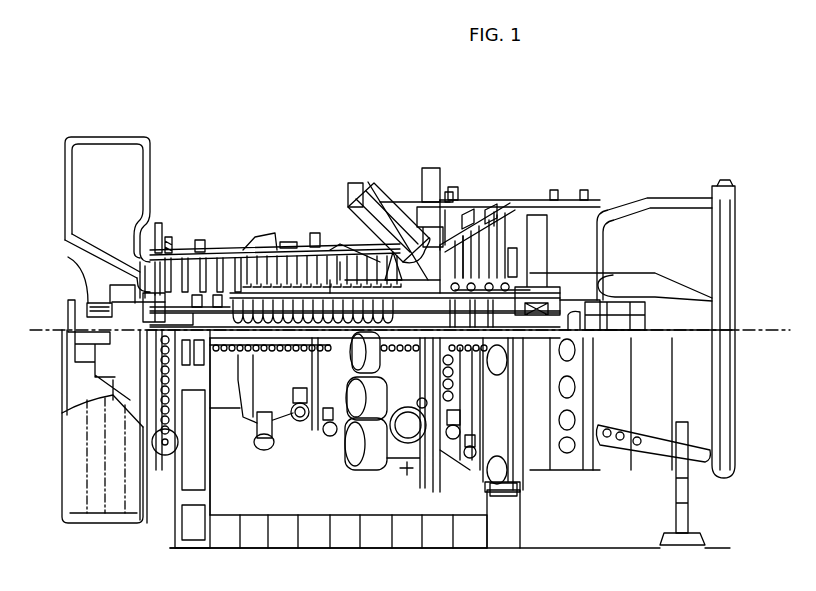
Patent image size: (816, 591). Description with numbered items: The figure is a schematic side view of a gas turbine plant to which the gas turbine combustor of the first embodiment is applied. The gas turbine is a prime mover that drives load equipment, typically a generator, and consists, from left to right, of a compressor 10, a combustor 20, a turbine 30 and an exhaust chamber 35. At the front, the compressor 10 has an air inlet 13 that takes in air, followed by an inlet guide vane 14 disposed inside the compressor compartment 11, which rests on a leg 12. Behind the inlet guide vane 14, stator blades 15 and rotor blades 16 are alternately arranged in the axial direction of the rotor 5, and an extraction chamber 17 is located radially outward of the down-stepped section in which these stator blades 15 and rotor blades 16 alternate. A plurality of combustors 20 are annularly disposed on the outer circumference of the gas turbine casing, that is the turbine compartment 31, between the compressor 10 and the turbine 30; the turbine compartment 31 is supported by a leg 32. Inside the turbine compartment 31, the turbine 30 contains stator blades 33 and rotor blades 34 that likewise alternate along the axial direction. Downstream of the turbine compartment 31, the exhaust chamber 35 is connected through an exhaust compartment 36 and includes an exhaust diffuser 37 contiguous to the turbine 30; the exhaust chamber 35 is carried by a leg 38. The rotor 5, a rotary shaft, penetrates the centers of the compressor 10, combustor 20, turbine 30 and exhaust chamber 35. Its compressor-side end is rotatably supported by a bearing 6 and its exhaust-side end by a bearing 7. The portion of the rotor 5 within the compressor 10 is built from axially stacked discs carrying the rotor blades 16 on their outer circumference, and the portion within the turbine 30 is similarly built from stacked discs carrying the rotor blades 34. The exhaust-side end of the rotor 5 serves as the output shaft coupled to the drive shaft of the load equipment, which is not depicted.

The rotor 5 is at (352, 240).
The bearing 6 is at (68, 257).
The bearing 7 is at (542, 290).
The compressor 10 is at (241, 203).
The compressor compartment 11 is at (207, 241).
The leg 12 is at (210, 470).
The air inlet 13 is at (73, 205).
The inlet guide vane 14 is at (142, 256).
The stator blades 15 is at (166, 222).
The rotor blades 16 is at (172, 245).
The extraction chamber 17 is at (272, 240).
The gas turbine combustor 20 is at (369, 169).
The turbine 30 is at (507, 177).
The turbine compartment 31 is at (494, 211).
The leg 32 is at (521, 505).
The stator blades 33 is at (455, 178).
The rotor blades 34 is at (466, 280).
The exhaust chamber 35 is at (669, 177).
The exhaust compartment 36 is at (545, 197).
The exhaust diffuser 37 is at (572, 197).
The leg 38 is at (690, 512).